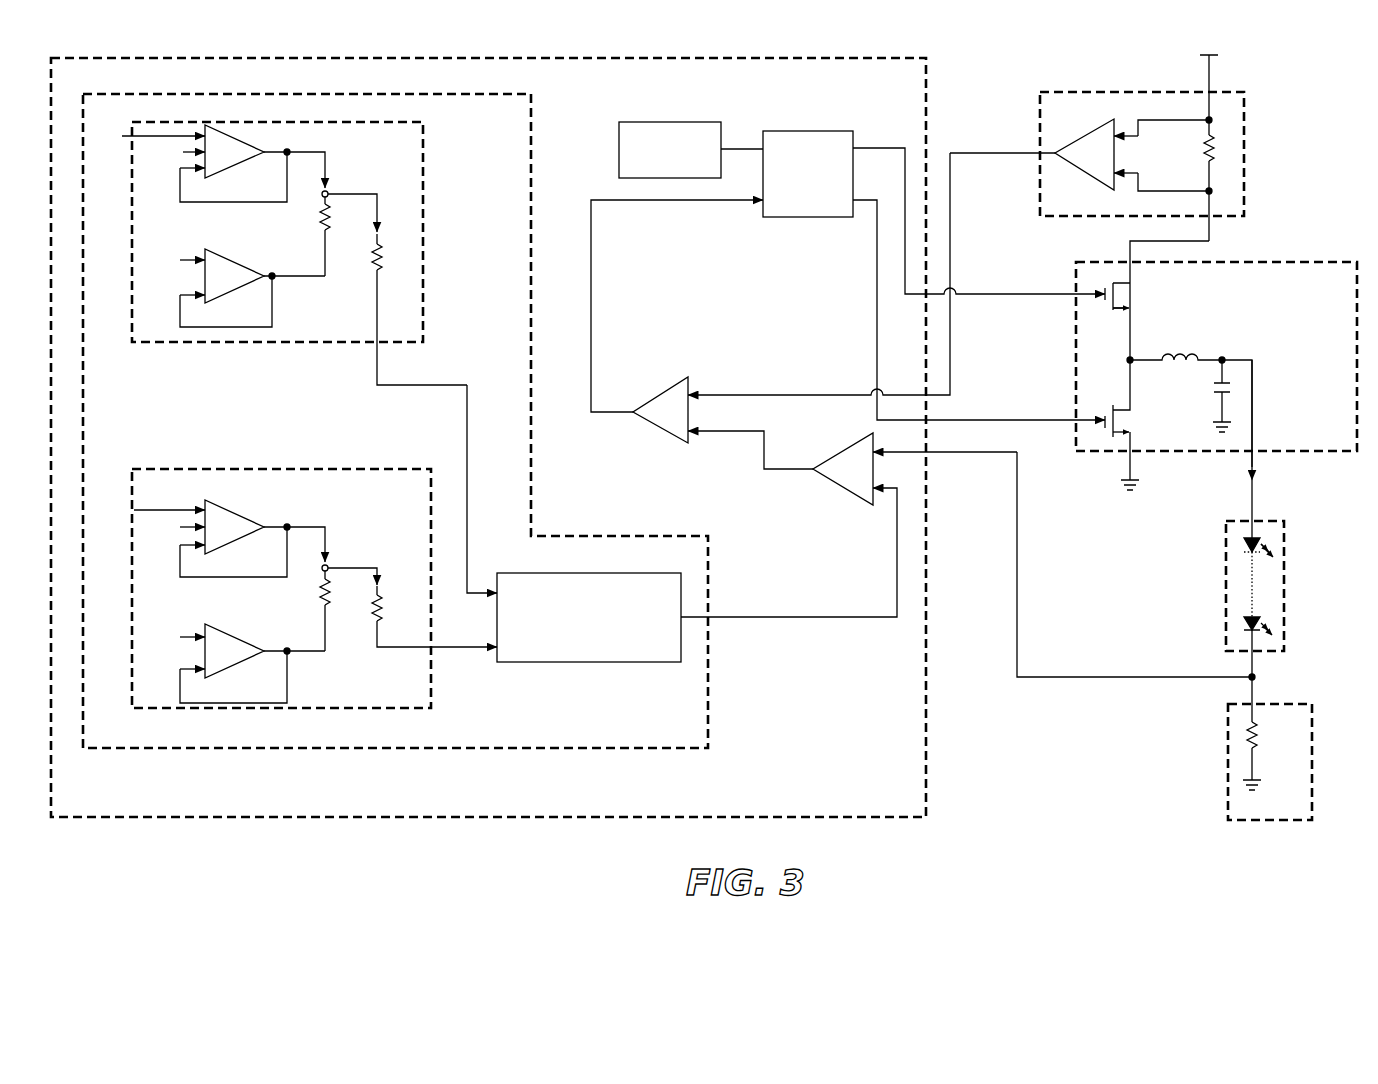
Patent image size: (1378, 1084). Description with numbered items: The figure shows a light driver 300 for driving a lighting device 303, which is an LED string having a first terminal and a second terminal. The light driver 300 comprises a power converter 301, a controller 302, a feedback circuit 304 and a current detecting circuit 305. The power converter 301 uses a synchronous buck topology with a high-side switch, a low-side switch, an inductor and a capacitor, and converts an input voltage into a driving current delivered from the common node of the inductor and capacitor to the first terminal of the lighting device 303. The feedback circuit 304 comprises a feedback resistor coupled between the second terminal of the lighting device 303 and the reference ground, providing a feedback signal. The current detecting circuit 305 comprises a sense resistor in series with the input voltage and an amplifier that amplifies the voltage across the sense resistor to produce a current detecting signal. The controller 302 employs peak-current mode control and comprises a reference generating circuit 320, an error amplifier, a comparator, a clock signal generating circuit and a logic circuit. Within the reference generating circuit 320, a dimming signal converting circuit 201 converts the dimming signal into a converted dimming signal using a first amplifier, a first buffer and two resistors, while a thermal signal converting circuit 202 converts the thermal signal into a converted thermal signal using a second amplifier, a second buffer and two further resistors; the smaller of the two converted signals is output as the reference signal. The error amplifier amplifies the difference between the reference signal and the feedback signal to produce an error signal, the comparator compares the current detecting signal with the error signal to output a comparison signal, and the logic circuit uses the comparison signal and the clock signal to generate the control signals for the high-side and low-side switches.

The light driver 300 is at (704, 437).
The controller 302 is at (928, 669).
The reference generating circuit 320 is at (708, 702).
The dimming signal converting circuit 201 is at (255, 345).
The thermal signal converting circuit 202 is at (235, 709).
The current detecting circuit 305 is at (1244, 158).
The power converter 301 is at (1250, 262).
The lighting device 303 is at (1284, 595).
The feedback circuit 304 is at (1313, 710).